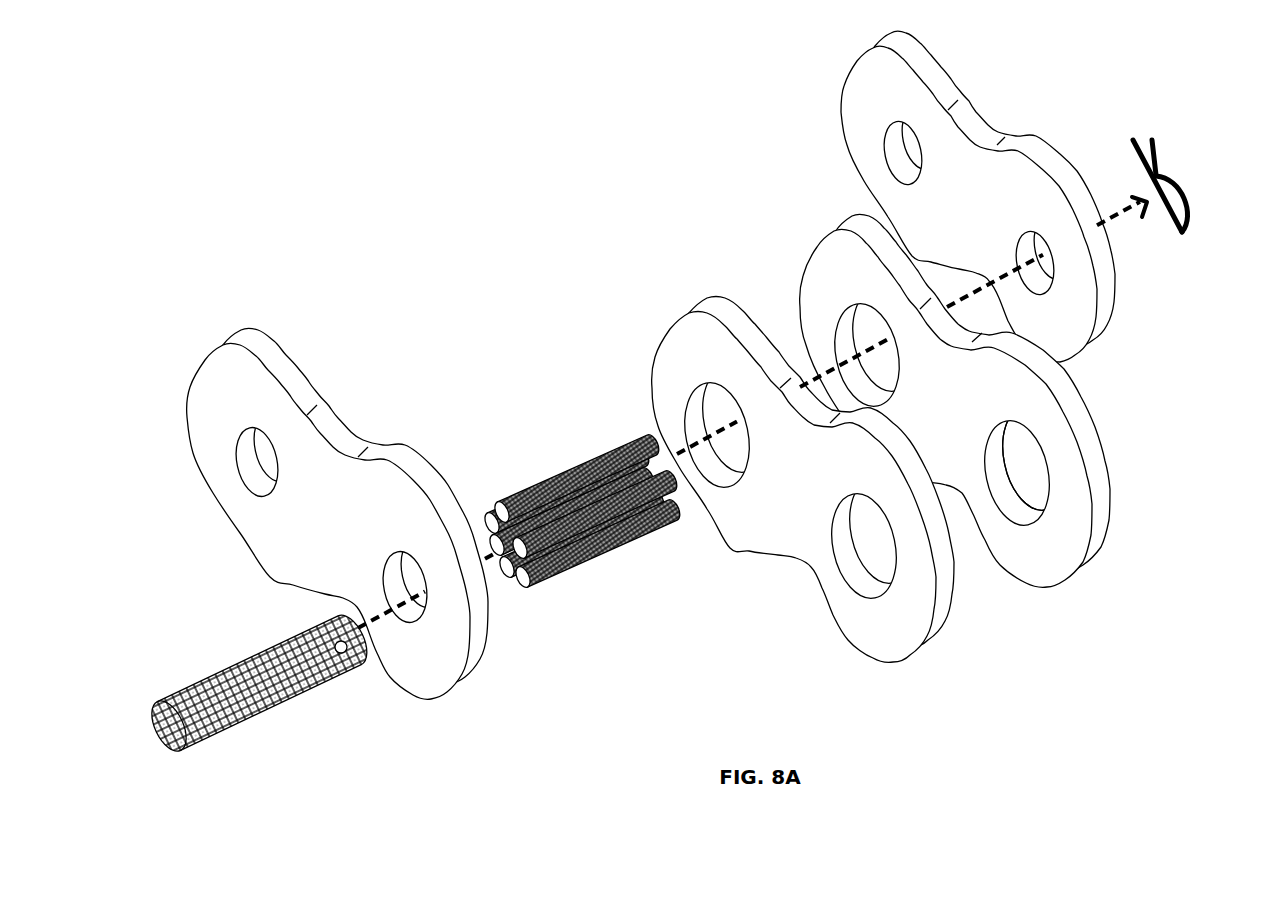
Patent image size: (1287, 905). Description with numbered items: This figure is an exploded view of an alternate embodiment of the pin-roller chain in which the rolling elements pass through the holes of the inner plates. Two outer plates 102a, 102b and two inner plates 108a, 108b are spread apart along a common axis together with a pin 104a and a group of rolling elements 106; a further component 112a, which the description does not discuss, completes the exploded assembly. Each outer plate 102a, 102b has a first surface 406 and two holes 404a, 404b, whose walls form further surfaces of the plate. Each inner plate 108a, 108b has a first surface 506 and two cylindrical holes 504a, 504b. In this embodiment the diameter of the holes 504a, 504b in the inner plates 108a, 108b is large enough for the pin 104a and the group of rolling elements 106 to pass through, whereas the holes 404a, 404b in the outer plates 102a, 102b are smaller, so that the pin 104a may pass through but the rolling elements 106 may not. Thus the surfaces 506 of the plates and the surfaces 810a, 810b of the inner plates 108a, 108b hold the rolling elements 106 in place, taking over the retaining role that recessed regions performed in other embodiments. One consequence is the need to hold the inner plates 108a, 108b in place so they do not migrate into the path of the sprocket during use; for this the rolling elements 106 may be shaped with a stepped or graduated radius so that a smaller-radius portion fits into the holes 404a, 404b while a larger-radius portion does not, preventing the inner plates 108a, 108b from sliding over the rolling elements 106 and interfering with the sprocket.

The outer plate 102a is at (944, 183).
The outer plate 102b is at (265, 345).
The pin 104a is at (243, 663).
The group of rolling elements 106 is at (553, 492).
The inner plate 108a is at (935, 378).
The inner plate 108b is at (709, 307).
The retaining clip 112a is at (1187, 200).
The hole 404a is at (406, 591).
The hole 404b is at (258, 462).
The first surface 406 is at (868, 100).
The cylindrical hole 504a is at (860, 563).
The cylindrical hole 504b is at (715, 422).
The first surface 506 is at (842, 260).
The inner plate surface 810a is at (1020, 510).
The inner plate surface 810b is at (847, 345).